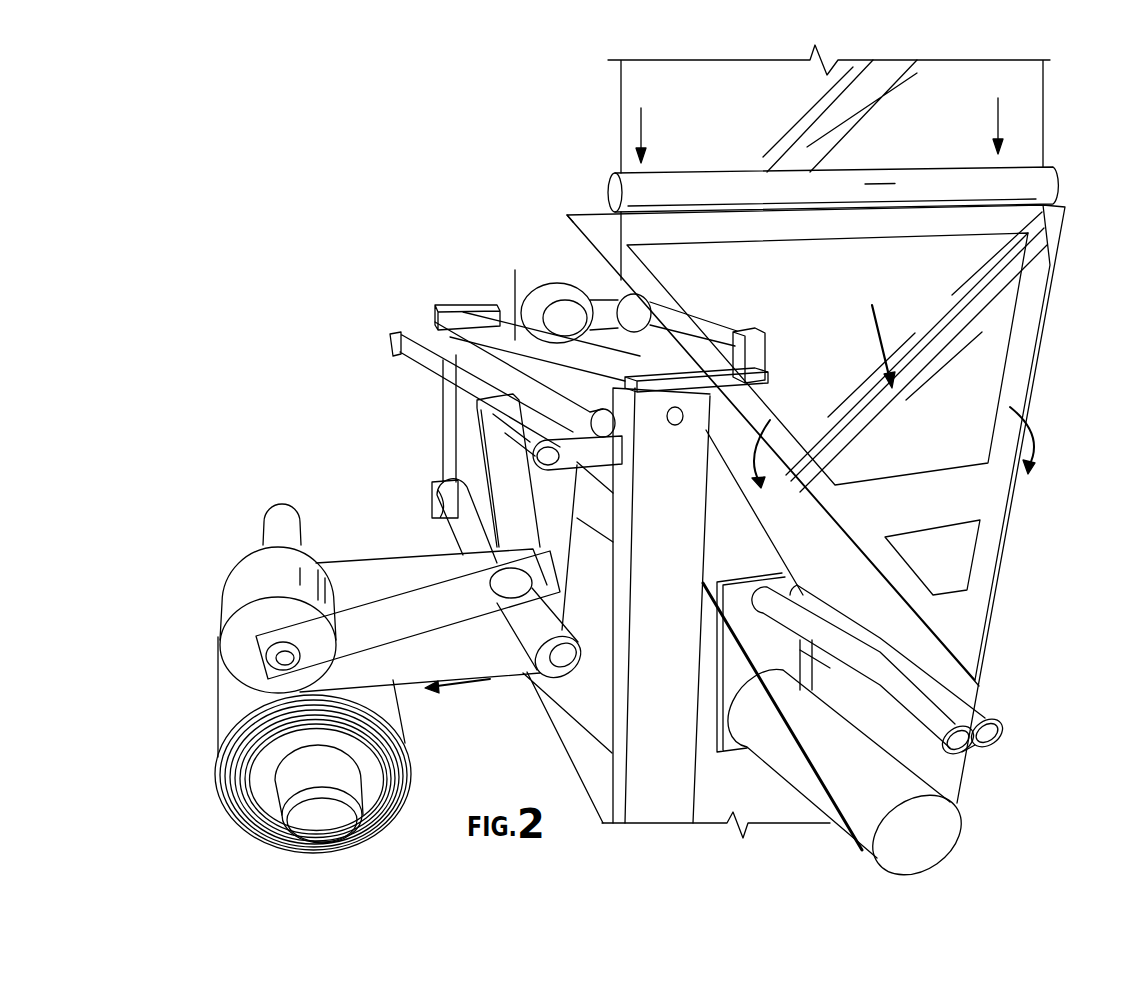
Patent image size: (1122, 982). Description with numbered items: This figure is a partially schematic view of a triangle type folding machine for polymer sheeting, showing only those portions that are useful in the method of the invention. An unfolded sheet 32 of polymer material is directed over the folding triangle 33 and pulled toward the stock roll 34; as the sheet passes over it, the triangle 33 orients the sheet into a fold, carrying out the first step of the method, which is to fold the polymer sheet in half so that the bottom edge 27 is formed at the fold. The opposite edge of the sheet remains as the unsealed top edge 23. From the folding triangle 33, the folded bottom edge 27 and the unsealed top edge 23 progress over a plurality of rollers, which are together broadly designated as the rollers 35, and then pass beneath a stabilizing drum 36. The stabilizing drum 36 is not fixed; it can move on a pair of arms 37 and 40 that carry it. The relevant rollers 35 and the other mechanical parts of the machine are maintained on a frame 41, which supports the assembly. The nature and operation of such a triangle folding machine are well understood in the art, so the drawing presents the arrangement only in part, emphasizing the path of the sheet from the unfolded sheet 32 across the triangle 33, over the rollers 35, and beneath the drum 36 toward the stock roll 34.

The unsealed top edge 23 is at (390, 556).
The bottom edge 27 is at (410, 680).
The unfolded sheet 32 is at (957, 137).
The folding triangle 33 is at (1023, 360).
The stock roll 34 is at (225, 718).
The rollers 35 is at (480, 270).
The stabilizing drum 36 is at (238, 593).
The arm 37 is at (425, 629).
The arm 40 is at (525, 509).
The frame 41 is at (683, 545).